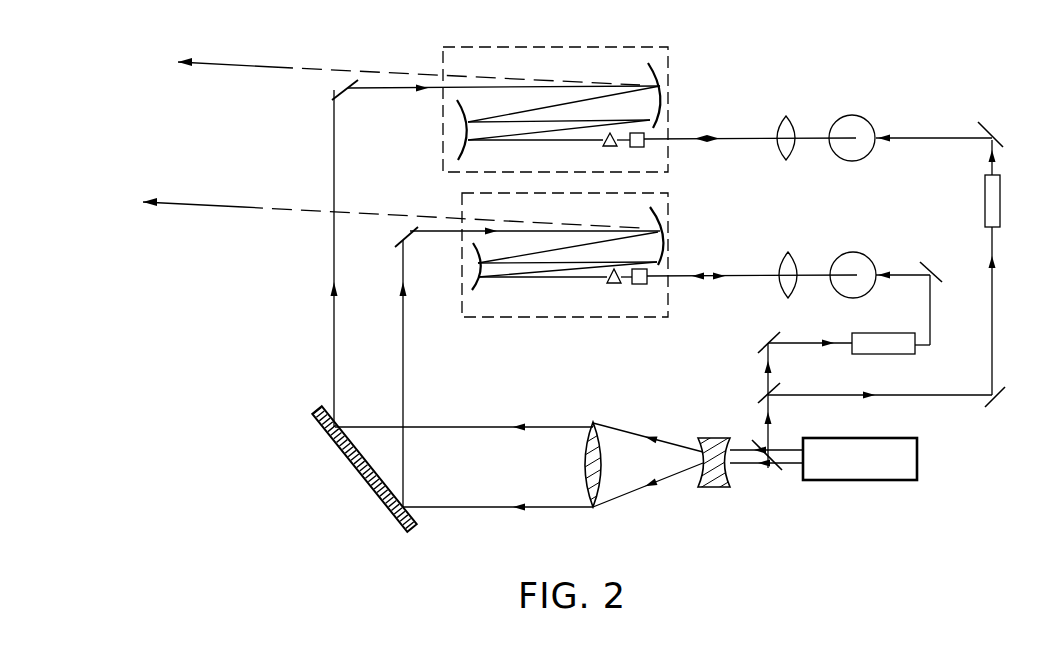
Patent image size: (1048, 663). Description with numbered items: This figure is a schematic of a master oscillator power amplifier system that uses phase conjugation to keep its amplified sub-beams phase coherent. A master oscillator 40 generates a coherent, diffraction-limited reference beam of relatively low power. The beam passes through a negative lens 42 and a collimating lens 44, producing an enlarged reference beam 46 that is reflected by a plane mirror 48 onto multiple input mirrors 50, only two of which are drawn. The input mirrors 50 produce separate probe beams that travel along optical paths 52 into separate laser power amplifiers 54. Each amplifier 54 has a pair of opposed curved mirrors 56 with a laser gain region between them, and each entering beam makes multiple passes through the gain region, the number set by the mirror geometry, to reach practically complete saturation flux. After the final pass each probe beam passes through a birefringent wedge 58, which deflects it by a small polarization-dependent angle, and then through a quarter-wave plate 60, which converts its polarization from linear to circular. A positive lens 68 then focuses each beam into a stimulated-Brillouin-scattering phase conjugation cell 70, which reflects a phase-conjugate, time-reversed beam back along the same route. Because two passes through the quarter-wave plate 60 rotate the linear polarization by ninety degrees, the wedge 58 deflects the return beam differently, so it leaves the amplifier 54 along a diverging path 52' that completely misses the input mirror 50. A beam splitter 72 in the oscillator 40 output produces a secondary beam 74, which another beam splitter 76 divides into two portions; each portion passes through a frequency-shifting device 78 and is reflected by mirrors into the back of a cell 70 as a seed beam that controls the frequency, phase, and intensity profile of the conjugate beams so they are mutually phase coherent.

The master oscillator 40 is at (860, 466).
The negative lens 42 is at (704, 488).
The collimating lens 44 is at (596, 423).
The enlarged reference beam 46 is at (453, 424).
The plane mirror 48 is at (324, 448).
The input mirror 50 is at (333, 98).
The optical path 52 is at (471, 296).
The path 52' is at (391, 129).
The laser power amplifier 54 is at (481, 43).
The curved mirror 56 is at (668, 91).
The birefringent wedge 58 is at (611, 289).
The quarter-wave plate 60 is at (654, 293).
The positive lens 68 is at (788, 119).
The phase conjugation cell 70 is at (861, 117).
The beam splitter 72 is at (773, 476).
The secondary beam 74 is at (775, 401).
The beam splitter 76 is at (760, 392).
The frequency-shifting device 78 is at (1000, 205).